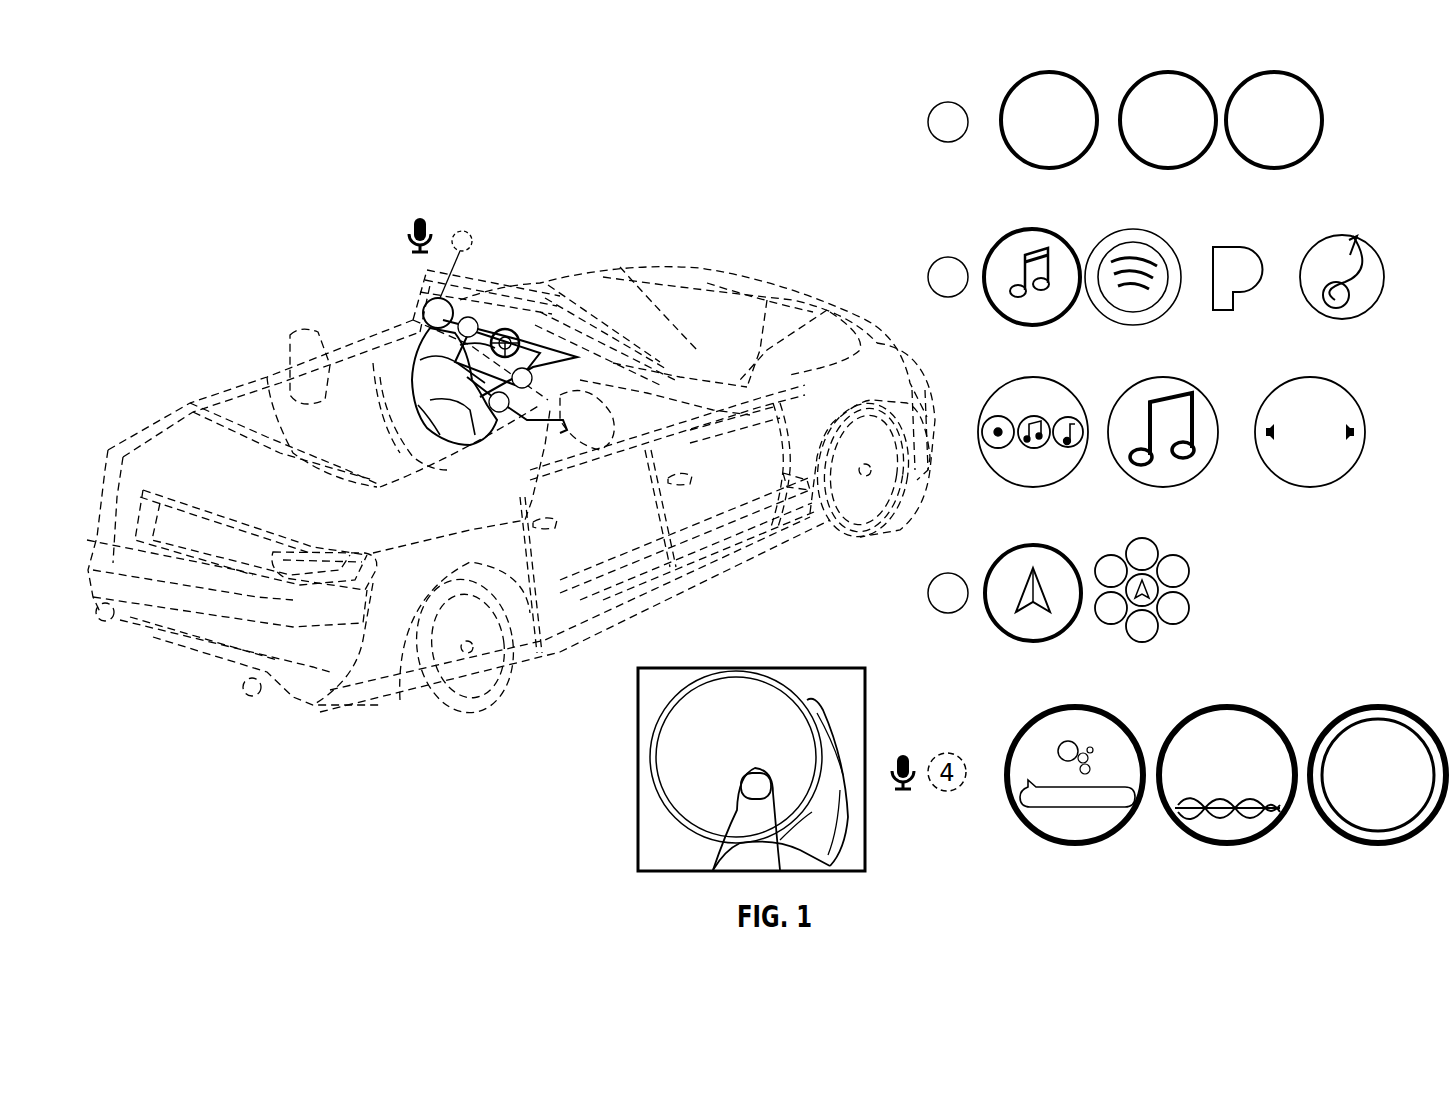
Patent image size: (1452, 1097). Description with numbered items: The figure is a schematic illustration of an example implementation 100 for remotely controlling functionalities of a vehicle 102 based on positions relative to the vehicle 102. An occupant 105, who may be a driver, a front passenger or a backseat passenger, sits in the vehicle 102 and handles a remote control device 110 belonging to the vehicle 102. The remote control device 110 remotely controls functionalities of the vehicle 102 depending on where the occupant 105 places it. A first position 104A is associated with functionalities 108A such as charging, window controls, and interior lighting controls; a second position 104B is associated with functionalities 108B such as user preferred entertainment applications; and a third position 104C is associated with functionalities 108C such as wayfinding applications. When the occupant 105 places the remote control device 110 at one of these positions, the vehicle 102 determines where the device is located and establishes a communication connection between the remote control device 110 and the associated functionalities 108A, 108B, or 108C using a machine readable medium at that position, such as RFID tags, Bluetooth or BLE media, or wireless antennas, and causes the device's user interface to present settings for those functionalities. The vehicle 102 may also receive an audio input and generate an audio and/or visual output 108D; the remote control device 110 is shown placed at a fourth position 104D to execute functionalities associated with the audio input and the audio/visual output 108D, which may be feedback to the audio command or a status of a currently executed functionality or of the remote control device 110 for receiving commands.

The implementation 100 is at (215, 125).
The vehicle 102 is at (374, 238).
The first position 104A is at (472, 318).
The second position 104B is at (532, 378).
The third position 104C is at (508, 405).
The fourth position 104D is at (460, 231).
The occupant 105 is at (425, 310).
The functionalities 108A is at (1334, 98).
The functionalities 108B is at (1348, 201).
The functionalities 108C is at (1187, 542).
The audio and/or visual output 108D is at (1271, 659).
The remote control device 110 is at (648, 747).